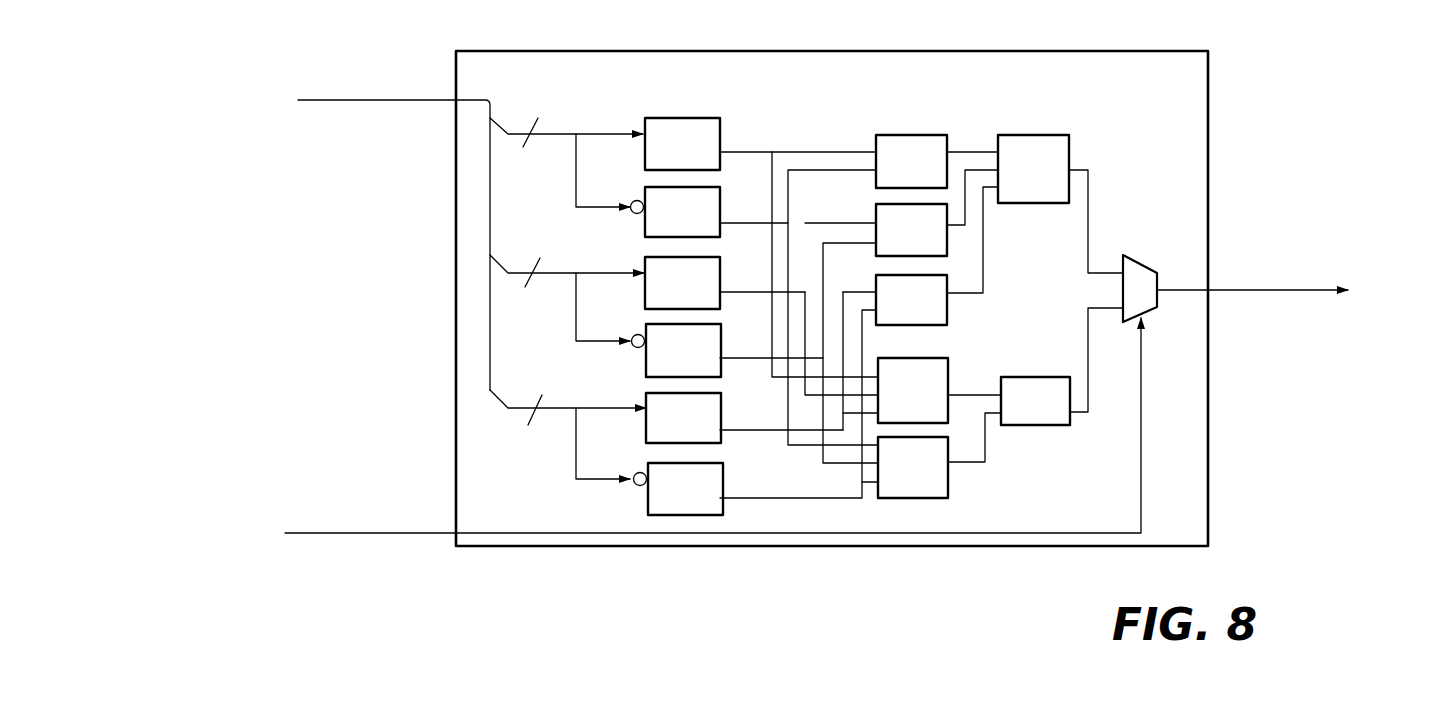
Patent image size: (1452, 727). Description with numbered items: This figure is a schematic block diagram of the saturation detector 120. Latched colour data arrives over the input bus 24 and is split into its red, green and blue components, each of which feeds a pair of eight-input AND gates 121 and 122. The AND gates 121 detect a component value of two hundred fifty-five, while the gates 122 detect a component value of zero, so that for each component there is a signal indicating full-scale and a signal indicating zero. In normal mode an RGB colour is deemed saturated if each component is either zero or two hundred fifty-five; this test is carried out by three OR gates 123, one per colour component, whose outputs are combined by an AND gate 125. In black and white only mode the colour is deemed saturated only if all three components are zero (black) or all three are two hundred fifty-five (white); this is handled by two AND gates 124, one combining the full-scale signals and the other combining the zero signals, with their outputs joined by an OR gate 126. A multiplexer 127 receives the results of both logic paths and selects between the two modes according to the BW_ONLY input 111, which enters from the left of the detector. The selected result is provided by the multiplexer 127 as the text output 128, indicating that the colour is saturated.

The latched CM data input bus 24 is at (385, 112).
The BW_ONLY input 111 is at (218, 510).
The saturation detector 120 is at (1208, 110).
The AND gates 121 is at (717, 118).
The AND gates 122 is at (645, 222).
The OR gates 123 is at (903, 135).
The AND gates 124 is at (948, 370).
The AND gate 125 is at (1069, 140).
The OR gate 126 is at (1040, 425).
The multiplexer 127 is at (1157, 270).
The text output 128 is at (1378, 296).